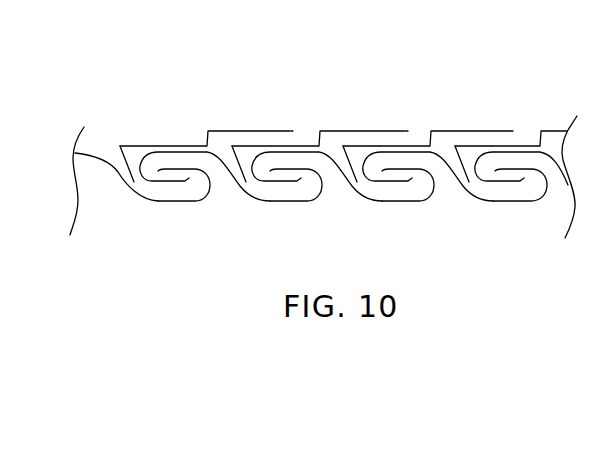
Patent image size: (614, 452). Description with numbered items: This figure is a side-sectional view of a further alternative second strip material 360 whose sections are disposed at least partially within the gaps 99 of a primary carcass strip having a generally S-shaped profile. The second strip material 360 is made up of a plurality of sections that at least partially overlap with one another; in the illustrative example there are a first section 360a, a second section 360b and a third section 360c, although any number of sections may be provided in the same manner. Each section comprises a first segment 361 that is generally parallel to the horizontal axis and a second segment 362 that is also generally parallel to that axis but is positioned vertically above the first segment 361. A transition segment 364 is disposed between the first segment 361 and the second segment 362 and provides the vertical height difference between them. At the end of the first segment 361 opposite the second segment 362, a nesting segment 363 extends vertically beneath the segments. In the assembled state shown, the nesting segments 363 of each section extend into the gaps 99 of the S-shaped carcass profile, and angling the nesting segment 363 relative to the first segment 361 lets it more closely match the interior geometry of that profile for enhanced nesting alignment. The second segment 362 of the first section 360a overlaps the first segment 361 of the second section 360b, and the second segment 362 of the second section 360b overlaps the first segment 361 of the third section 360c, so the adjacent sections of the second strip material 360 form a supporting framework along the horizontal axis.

The second strip material 360 is at (160, 124).
The first section 360a is at (216, 121).
The second section 360b is at (333, 124).
The third section 360c is at (477, 124).
The first segment 361 is at (300, 138).
The second segment 362 is at (246, 130).
The nesting segment 363 is at (220, 194).
The transition segment 364 is at (327, 192).
The gaps 99 is at (250, 192).